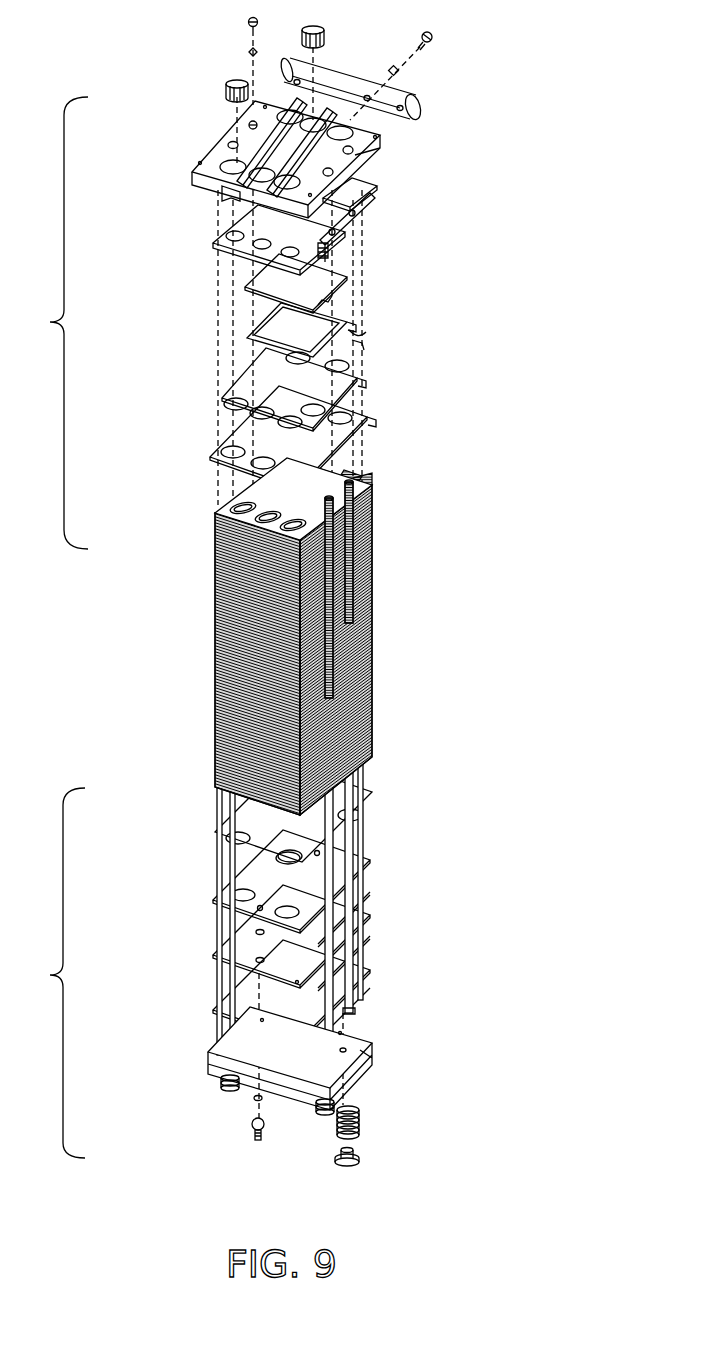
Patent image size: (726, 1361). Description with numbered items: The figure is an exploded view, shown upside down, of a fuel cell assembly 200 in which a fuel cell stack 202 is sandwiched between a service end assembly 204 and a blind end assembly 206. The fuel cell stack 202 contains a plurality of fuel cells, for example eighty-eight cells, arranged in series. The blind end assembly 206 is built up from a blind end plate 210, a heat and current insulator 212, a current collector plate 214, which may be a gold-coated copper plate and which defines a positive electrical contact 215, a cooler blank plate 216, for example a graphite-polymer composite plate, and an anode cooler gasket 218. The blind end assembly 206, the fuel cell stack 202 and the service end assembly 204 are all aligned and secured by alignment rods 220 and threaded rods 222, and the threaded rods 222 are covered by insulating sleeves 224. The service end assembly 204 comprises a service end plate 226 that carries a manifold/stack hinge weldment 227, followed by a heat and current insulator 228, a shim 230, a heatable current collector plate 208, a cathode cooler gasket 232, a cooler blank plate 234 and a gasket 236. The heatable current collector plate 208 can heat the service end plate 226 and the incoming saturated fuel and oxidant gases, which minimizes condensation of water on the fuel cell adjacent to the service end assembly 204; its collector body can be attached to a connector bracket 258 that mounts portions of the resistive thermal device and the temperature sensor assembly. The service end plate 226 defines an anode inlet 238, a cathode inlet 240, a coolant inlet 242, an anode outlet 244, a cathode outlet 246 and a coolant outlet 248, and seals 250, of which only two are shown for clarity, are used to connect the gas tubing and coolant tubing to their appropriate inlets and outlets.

The fuel cell assembly 200 is at (307, 587).
The fuel cell stack 202 is at (372, 620).
The service end assembly 204 is at (254, 279).
The blind end assembly 206 is at (235, 894).
The heatable current collector plate 208 is at (247, 338).
The blind end plate 210 is at (208, 1062).
The heat and current insulator 212 is at (215, 1006).
The current collector plate 214 is at (368, 913).
The positive electrical contact 215 is at (366, 892).
The cooler blank plate 216 is at (365, 861).
The anode cooler gasket 218 is at (222, 836).
The alignment rods 220 is at (363, 783).
The threaded rods 222 is at (347, 1005).
The insulating sleeves 224 is at (368, 936).
The service end plate 226 is at (256, 159).
The manifold/stack hinge weldment 227 is at (418, 108).
The heat and current insulator 228 is at (215, 243).
The shim 230 is at (250, 287).
The cathode cooler gasket 232 is at (357, 380).
The cooler blank plate 234 is at (365, 420).
The gasket 236 is at (362, 488).
The anode inlet 238 is at (330, 192).
The cathode inlet 240 is at (228, 170).
The coolant inlet 242 is at (228, 190).
The anode outlet 244 is at (284, 112).
The cathode outlet 246 is at (365, 150).
The coolant outlet 248 is at (320, 115).
The seals 250 is at (324, 34).
The connector bracket 258 is at (360, 235).